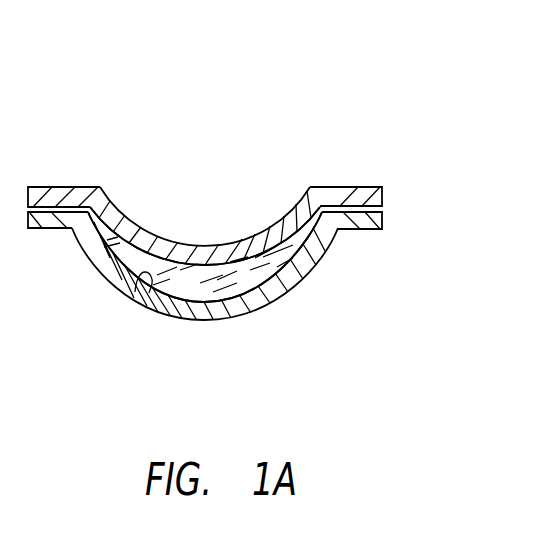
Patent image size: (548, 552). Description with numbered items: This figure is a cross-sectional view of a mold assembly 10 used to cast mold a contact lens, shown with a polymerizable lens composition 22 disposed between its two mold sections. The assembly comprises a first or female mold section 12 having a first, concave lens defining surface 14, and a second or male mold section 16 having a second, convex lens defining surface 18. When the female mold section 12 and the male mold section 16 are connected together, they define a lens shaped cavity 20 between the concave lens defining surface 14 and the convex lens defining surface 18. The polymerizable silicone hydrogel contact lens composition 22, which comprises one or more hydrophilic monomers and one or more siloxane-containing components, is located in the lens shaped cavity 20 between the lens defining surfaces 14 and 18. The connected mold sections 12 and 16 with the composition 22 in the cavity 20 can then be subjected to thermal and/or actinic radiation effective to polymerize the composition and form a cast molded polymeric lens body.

The mold assembly 10 is at (148, 130).
The female mold section 12 is at (303, 283).
The concave lens defining surface 14 is at (135, 292).
The male mold section 16 is at (310, 187).
The convex lens defining surface 18 is at (128, 242).
The lens shaped cavity 20 is at (250, 278).
The polymerizable lens composition 22 is at (197, 292).